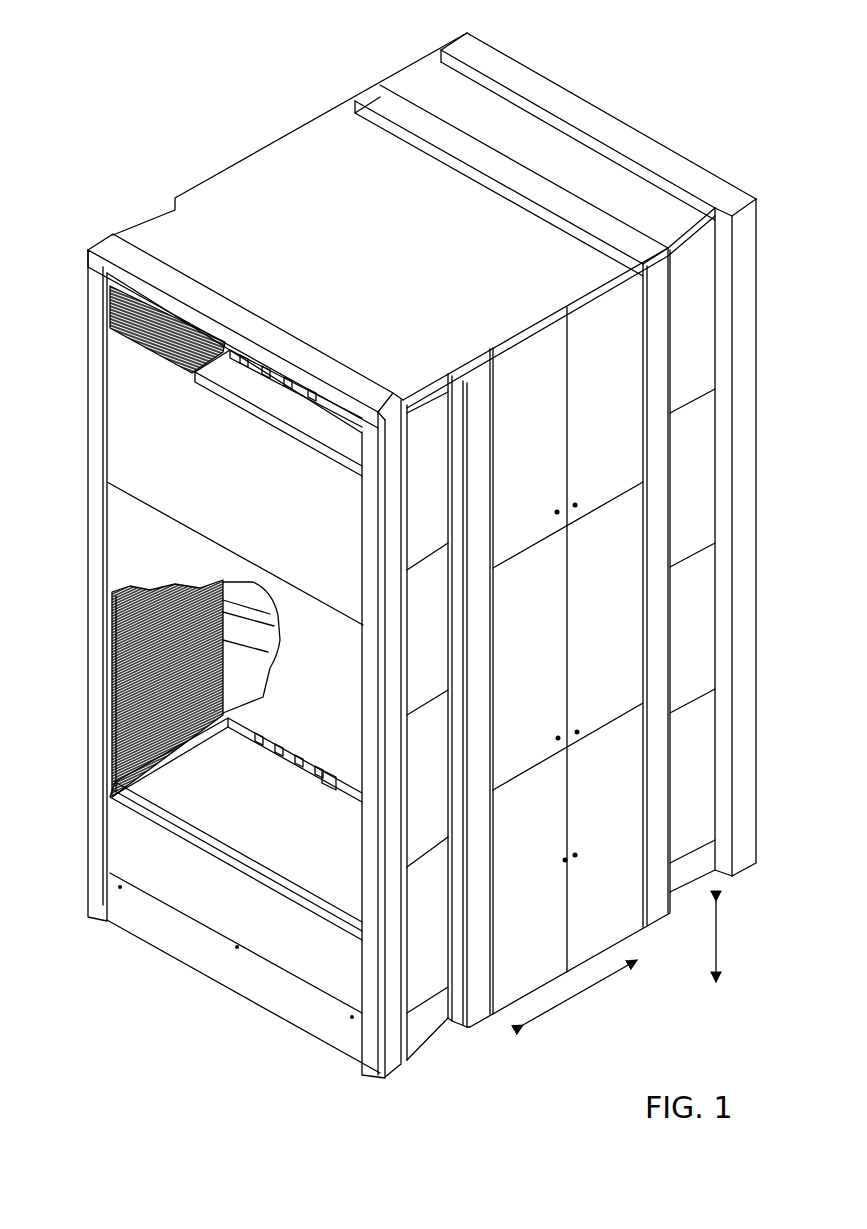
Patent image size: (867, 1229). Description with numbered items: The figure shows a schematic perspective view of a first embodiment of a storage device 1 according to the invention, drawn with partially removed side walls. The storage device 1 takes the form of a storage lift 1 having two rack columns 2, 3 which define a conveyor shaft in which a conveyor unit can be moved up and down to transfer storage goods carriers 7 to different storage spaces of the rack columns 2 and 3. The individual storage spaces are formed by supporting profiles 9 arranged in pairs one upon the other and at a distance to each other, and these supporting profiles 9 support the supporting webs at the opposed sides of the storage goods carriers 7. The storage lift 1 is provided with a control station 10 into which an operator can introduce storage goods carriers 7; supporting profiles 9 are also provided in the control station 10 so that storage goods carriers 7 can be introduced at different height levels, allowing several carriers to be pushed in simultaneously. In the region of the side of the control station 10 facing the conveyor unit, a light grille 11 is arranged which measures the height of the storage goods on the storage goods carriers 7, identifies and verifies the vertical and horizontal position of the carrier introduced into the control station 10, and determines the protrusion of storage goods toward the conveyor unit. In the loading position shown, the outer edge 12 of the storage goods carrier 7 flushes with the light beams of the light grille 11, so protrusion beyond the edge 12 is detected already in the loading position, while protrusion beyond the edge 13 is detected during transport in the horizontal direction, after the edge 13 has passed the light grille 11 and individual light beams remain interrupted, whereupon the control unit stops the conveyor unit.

The storage device 1 is at (556, 62).
The rack column 2 is at (142, 214).
The rack column 3 is at (410, 63).
The storage goods carrier 7 is at (242, 388).
The supporting profile 9 is at (103, 313).
The control station 10 is at (140, 776).
The light grille 11 is at (273, 625).
The outer edge 12 is at (330, 782).
The edge 13 is at (257, 863).